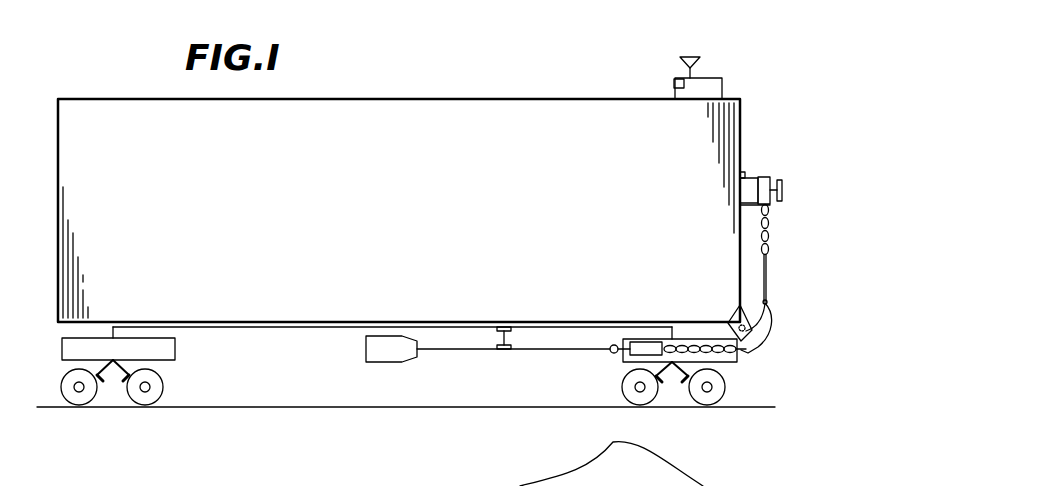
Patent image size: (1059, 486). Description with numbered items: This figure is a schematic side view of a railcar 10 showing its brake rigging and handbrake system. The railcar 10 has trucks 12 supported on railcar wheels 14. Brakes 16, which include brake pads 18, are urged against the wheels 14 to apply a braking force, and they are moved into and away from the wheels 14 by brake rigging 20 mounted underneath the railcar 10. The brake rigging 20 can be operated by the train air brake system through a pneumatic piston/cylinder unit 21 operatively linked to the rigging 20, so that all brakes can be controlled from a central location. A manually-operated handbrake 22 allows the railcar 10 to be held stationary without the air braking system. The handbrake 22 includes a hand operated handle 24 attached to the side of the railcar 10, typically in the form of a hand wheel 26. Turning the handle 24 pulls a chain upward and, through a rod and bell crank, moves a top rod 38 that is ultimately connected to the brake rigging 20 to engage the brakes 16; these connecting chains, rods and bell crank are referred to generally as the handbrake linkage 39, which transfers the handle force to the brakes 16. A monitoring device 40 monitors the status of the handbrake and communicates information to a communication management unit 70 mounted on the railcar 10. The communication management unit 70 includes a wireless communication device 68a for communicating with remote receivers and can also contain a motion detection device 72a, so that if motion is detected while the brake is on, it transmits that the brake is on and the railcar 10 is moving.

The railcar 10 is at (82, 103).
The truck 12 is at (68, 347).
The railcar wheel 14 is at (78, 405).
The brake 16 is at (107, 388).
The brake pad 18 is at (127, 407).
The brake rigging 20 is at (260, 335).
The pneumatic piston/cylinder unit 21 is at (377, 362).
The handbrake 22 is at (782, 226).
The handle 24 is at (783, 191).
The hand wheel 26 is at (766, 178).
The top rod 38 is at (547, 345).
The handbrake linkage 39 is at (562, 360).
The monitoring device 40 is at (638, 345).
The wireless communication device 68a is at (692, 48).
The communication management unit 70 is at (710, 80).
The motion detection device 72a is at (672, 83).